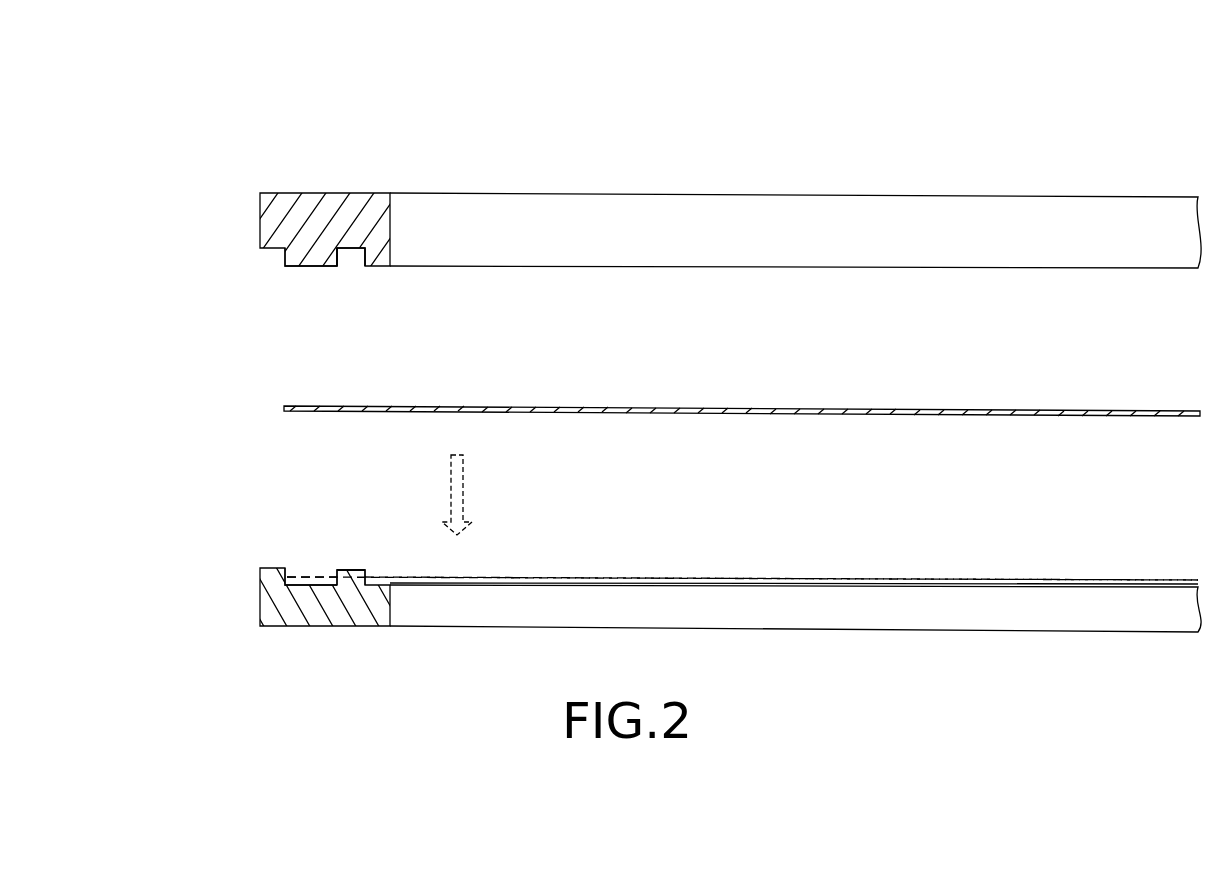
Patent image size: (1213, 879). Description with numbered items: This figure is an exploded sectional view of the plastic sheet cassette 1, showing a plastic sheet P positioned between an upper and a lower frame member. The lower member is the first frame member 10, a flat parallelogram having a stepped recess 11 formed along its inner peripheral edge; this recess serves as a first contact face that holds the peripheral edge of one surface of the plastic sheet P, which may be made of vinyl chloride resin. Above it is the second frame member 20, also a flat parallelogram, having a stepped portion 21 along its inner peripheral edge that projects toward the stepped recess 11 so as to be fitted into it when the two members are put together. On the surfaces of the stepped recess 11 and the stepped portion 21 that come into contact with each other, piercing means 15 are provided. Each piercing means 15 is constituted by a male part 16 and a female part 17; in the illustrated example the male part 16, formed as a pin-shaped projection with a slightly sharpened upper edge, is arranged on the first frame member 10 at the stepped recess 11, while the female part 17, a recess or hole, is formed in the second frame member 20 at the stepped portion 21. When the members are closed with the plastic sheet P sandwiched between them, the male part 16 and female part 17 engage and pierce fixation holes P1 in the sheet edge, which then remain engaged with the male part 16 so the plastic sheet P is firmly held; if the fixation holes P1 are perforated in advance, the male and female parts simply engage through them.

The plastic sheet cassette 1 is at (175, 143).
The first frame member 10 is at (270, 610).
The stepped recess 11 is at (307, 580).
The piercing means 15 is at (142, 397).
The male part 16 is at (350, 570).
The female part 17 is at (350, 253).
The second frame member 20 is at (268, 225).
The stepped portion 21 is at (307, 265).
The plastic sheet P is at (876, 408).
The fixation holes P1 is at (362, 574).